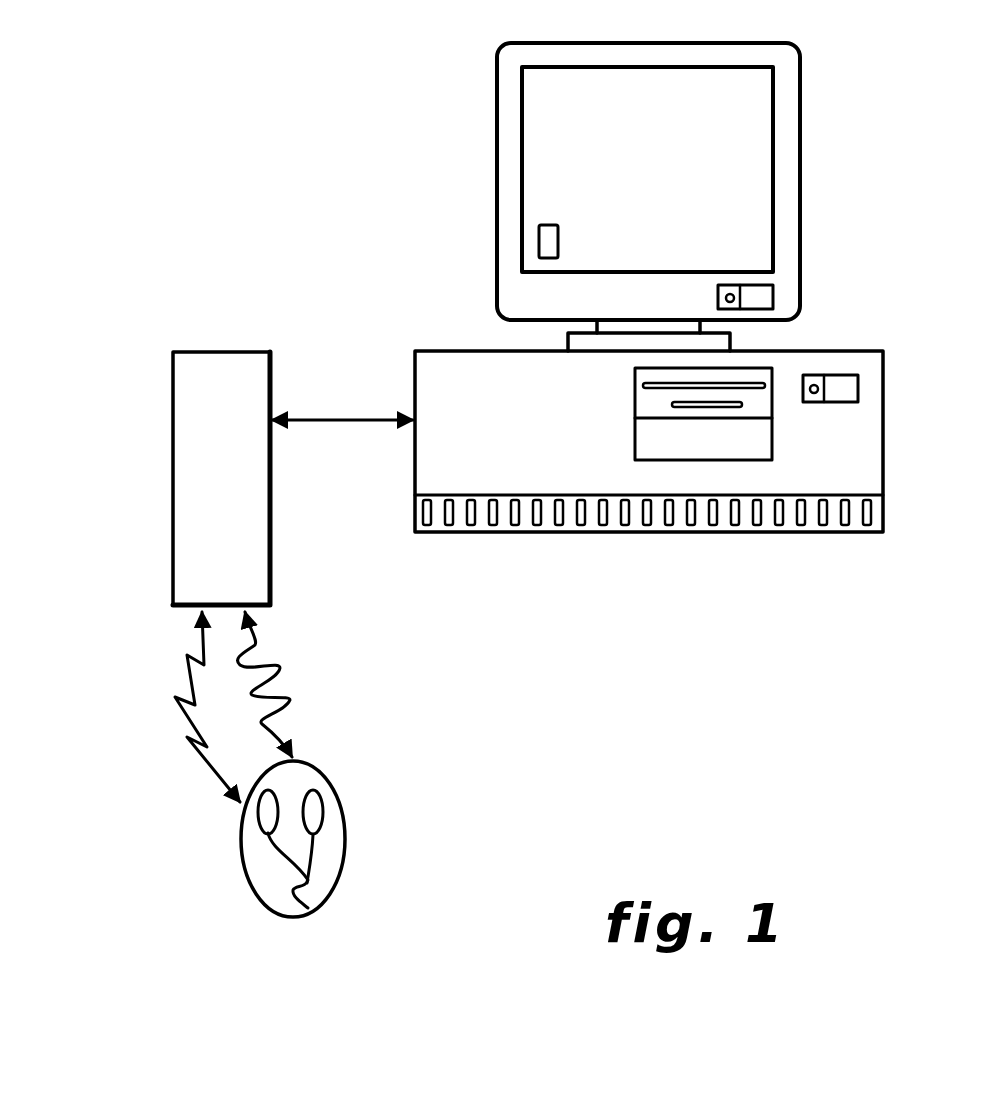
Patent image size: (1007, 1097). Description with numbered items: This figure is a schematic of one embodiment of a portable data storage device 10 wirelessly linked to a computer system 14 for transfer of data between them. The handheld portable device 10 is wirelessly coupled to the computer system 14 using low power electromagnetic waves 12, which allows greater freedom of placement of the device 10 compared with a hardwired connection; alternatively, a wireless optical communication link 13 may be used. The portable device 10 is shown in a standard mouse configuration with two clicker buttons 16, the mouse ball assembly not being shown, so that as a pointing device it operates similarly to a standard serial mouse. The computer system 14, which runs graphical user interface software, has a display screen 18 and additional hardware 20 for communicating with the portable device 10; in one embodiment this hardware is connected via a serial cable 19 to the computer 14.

The portable data storage device 10 is at (253, 887).
The low power electromagnetic waves 12 is at (200, 758).
The wireless optical communication link 13 is at (290, 697).
The computer system 14 is at (497, 103).
The clicker buttons 16 is at (313, 905).
The display screen 18 is at (539, 243).
The serial cable 19 is at (345, 420).
The additional hardware 20 is at (222, 352).